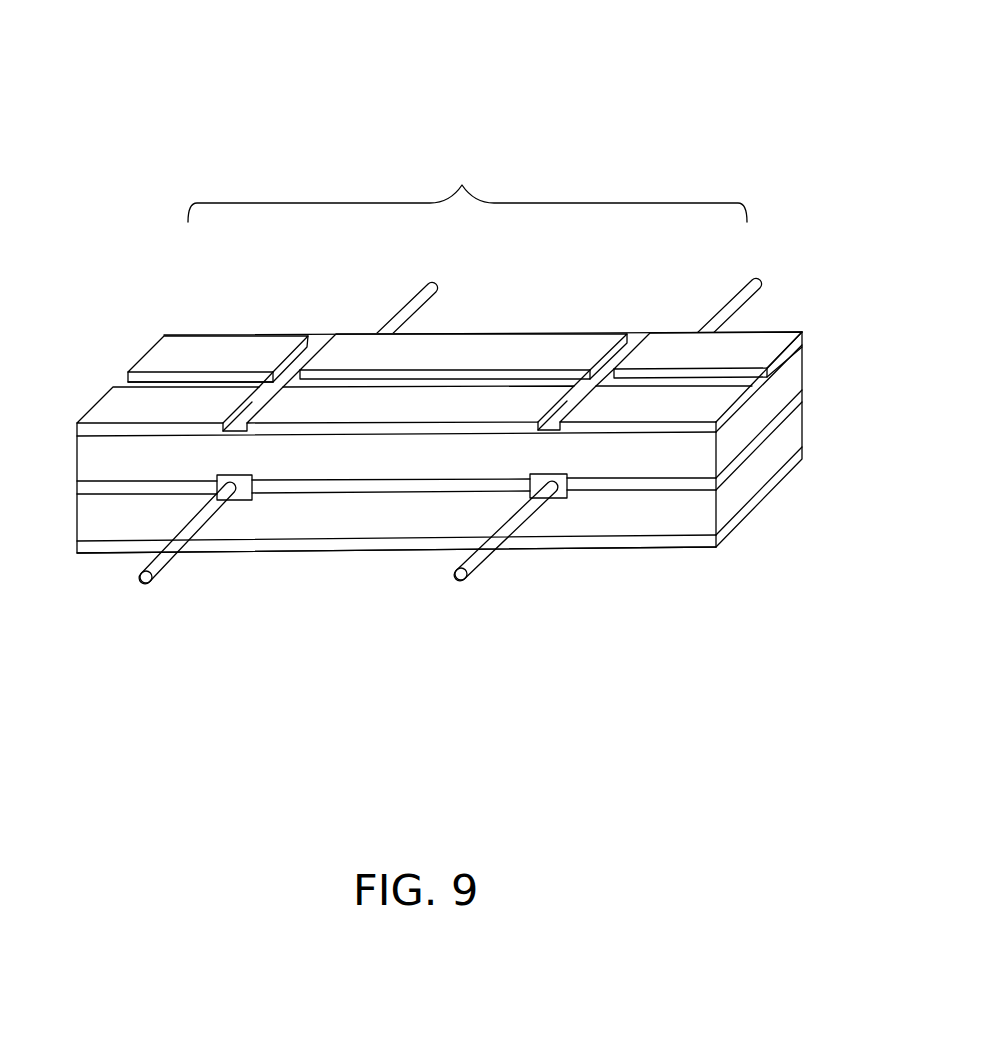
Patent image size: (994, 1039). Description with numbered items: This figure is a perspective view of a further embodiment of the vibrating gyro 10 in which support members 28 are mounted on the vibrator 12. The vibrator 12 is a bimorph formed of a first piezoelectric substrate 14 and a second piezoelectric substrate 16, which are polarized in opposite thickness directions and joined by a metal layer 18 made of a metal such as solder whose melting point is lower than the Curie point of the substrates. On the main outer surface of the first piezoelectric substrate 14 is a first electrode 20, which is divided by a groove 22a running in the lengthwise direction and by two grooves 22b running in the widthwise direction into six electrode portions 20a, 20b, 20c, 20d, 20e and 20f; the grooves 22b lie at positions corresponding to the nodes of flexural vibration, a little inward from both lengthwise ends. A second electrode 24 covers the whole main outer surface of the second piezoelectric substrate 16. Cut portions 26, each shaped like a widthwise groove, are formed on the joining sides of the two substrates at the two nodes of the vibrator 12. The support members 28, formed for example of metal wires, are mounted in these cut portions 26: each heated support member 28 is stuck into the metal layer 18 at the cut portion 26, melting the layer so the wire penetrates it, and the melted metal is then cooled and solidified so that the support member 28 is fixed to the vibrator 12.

The vibrating gyro 10 is at (168, 136).
The vibrator 12 is at (717, 557).
The first piezoelectric substrate 14 is at (791, 378).
The second piezoelectric substrate 16 is at (792, 435).
The metal layer 18 is at (797, 400).
The first electrode 20 is at (467, 186).
The electrode portion 20a is at (430, 347).
The electrode portion 20b is at (467, 397).
The electrode portion 20c is at (215, 345).
The electrode portion 20d is at (230, 393).
The electrode portion 20e is at (652, 393).
The electrode portion 20f is at (664, 337).
The groove 22a is at (165, 373).
The grooves 22b is at (247, 420).
The second electrode 24 is at (780, 478).
The cut portions 26 is at (248, 508).
The support members 28 is at (157, 568).